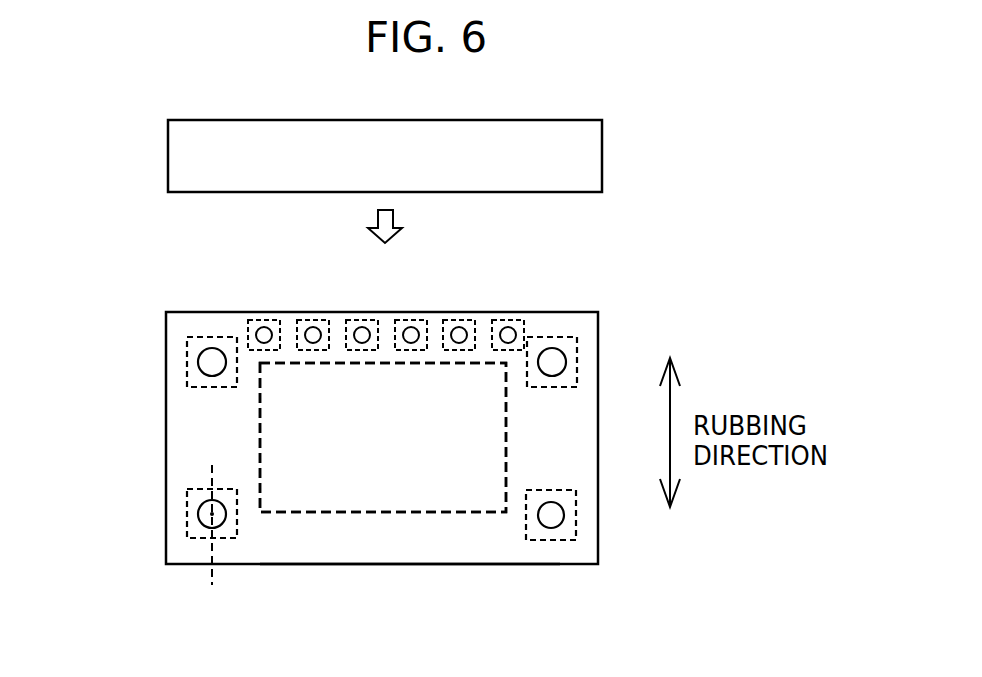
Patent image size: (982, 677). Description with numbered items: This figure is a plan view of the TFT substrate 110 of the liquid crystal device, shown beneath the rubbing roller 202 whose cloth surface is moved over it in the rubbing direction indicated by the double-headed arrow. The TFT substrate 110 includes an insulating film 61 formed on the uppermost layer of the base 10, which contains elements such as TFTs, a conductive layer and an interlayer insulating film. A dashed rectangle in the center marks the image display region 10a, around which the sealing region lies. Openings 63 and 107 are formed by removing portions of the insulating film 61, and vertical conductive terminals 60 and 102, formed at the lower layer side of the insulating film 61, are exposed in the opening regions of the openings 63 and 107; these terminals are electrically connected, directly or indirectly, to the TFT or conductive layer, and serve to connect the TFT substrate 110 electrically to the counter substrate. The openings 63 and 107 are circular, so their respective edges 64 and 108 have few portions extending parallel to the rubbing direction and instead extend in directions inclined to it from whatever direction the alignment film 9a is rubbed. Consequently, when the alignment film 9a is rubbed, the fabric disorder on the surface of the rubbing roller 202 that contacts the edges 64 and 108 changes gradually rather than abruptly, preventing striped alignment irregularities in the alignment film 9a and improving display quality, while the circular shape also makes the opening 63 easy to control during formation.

The rubbing roller 202 is at (569, 133).
The TFT substrate 110 is at (139, 273).
The base 10 is at (598, 534).
The image display region 10a is at (455, 515).
The alignment film 9a is at (376, 505).
The vertical conductive terminal 102 is at (392, 304).
The opening 107 is at (405, 330).
The edge 108 is at (412, 333).
The insulating film 61 is at (294, 556).
The vertical conductive terminal 60 is at (202, 542).
The opening 63 is at (208, 512).
The edge 64 is at (200, 510).